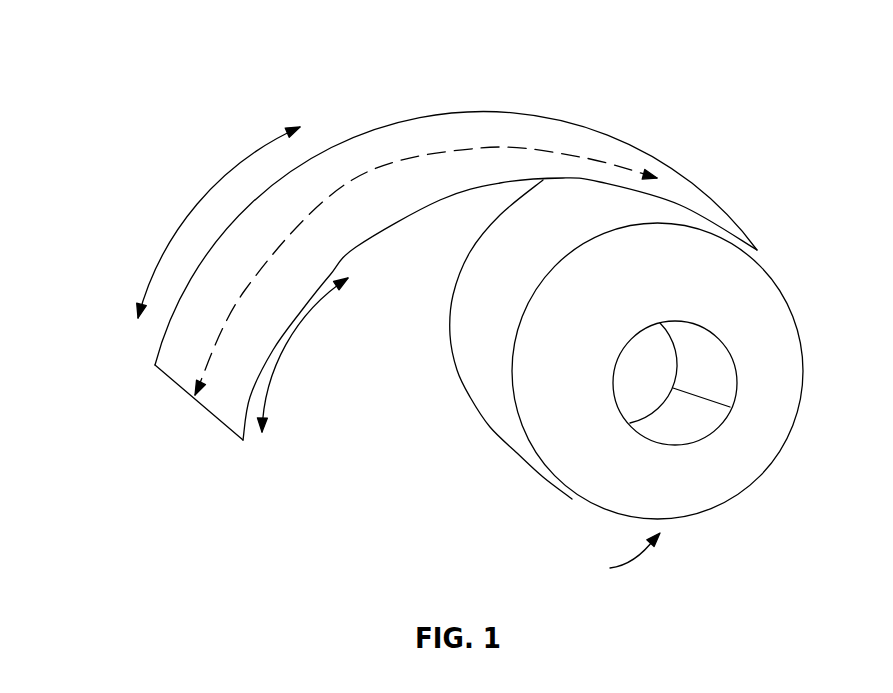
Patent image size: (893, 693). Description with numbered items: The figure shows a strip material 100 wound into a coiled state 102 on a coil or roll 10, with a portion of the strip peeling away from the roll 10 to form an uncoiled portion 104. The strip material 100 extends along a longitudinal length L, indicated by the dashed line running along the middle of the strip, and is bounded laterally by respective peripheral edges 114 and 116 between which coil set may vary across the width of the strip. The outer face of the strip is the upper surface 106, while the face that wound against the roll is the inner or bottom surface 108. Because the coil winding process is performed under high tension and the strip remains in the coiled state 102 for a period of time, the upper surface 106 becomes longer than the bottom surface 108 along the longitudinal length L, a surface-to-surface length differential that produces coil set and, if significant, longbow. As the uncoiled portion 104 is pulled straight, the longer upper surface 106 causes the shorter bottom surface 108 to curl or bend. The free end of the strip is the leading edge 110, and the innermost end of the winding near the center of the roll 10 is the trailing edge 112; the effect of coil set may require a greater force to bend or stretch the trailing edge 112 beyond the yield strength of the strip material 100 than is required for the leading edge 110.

The roll 10 is at (757, 475).
The strip material 100 is at (456, 265).
The coiled state 102 is at (610, 562).
The uncoiled portion 104 is at (158, 384).
The upper surface 106 is at (456, 201).
The bottom surface 108 is at (500, 309).
The leading edge 110 is at (210, 418).
The trailing edge 112 is at (707, 390).
The peripheral edge 114 is at (450, 113).
The peripheral edge 116 is at (457, 197).
The longitudinal length L is at (508, 150).